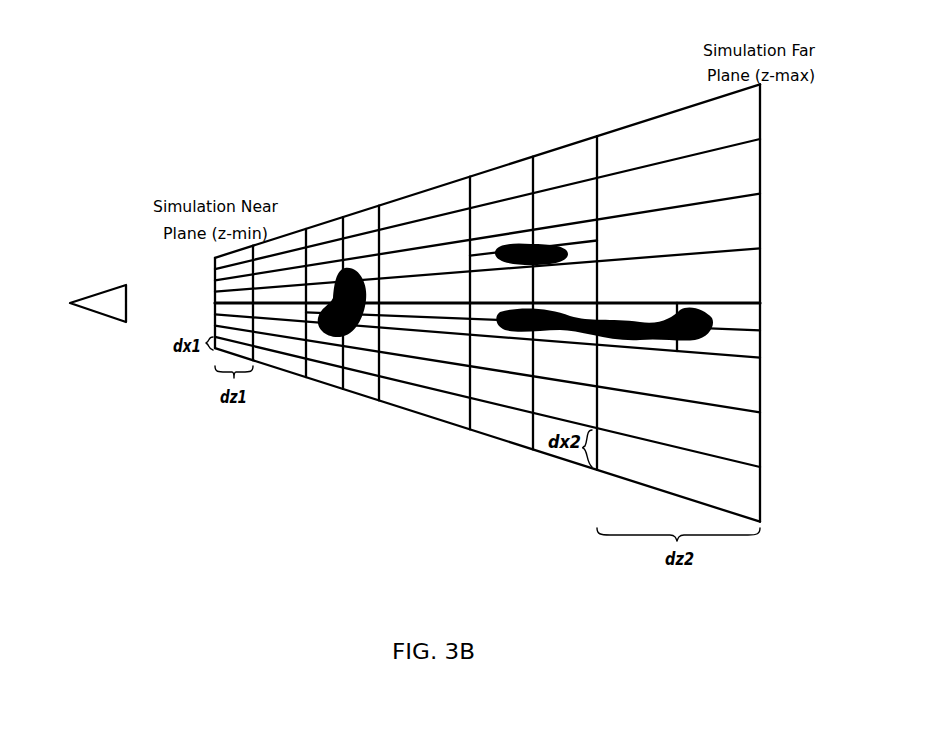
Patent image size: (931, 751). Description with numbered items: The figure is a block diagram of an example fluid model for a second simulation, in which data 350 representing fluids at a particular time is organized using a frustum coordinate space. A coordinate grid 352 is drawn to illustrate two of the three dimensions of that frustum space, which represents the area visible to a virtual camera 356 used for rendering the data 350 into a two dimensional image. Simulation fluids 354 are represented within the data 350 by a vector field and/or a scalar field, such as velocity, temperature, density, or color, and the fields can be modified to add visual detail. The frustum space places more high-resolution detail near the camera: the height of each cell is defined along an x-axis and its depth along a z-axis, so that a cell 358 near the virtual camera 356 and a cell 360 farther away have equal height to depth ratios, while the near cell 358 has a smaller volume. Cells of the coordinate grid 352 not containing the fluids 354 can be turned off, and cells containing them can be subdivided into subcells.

The data 350 is at (109, 53).
The coordinate grid 352 is at (760, 246).
The simulation fluids 354 is at (622, 315).
The virtual camera 356 is at (104, 292).
The cell 358 is at (215, 350).
The cell 360 is at (597, 470).